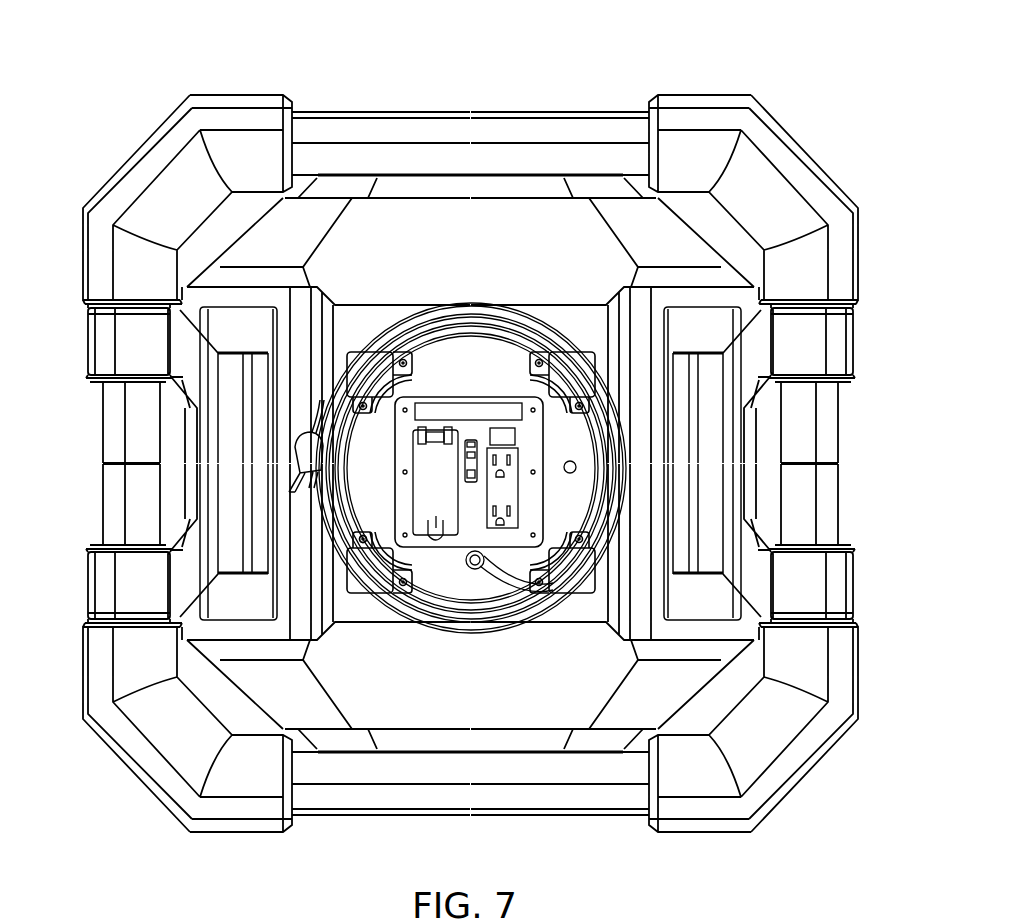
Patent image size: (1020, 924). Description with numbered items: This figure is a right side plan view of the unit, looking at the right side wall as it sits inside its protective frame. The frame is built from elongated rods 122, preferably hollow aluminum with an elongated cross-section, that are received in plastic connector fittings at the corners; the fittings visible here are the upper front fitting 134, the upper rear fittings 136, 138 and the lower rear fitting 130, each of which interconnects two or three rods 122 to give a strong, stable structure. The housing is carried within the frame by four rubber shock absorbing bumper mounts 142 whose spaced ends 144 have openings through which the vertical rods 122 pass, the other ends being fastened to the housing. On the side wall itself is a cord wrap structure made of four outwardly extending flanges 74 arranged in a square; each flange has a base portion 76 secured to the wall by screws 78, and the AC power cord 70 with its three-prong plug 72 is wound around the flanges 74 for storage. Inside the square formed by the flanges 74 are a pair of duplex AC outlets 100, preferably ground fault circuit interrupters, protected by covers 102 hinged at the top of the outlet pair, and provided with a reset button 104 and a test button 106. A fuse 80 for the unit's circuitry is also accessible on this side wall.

The cord 70 is at (453, 323).
The 3-prong plug 72 is at (300, 455).
The flanges 74 is at (353, 357).
The base portion 76 is at (540, 373).
The screws 78 is at (363, 538).
The fuse 80 is at (571, 461).
The duplex AC outlets 100 is at (502, 497).
The covers 102 is at (427, 470).
The reset button 104 is at (475, 450).
The test button 106 is at (478, 473).
The elongated rods 122 is at (472, 130).
The lower rear fitting 130 is at (790, 763).
The upper front fitting 134 is at (172, 148).
The upper rear fitting 136 is at (257, 810).
The upper rear fitting 138 is at (790, 167).
The shock absorbing bumper mounts 142 is at (230, 550).
The spaced ends 144 is at (117, 352).